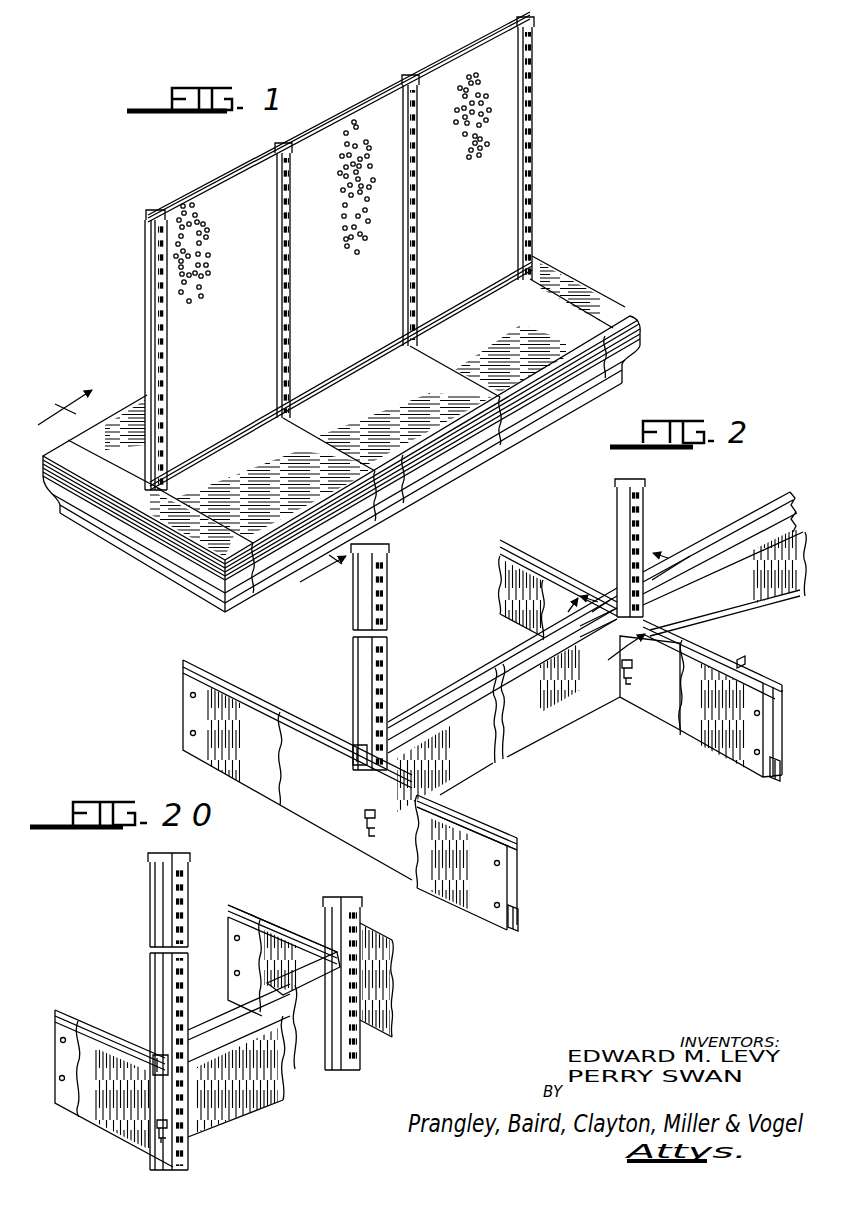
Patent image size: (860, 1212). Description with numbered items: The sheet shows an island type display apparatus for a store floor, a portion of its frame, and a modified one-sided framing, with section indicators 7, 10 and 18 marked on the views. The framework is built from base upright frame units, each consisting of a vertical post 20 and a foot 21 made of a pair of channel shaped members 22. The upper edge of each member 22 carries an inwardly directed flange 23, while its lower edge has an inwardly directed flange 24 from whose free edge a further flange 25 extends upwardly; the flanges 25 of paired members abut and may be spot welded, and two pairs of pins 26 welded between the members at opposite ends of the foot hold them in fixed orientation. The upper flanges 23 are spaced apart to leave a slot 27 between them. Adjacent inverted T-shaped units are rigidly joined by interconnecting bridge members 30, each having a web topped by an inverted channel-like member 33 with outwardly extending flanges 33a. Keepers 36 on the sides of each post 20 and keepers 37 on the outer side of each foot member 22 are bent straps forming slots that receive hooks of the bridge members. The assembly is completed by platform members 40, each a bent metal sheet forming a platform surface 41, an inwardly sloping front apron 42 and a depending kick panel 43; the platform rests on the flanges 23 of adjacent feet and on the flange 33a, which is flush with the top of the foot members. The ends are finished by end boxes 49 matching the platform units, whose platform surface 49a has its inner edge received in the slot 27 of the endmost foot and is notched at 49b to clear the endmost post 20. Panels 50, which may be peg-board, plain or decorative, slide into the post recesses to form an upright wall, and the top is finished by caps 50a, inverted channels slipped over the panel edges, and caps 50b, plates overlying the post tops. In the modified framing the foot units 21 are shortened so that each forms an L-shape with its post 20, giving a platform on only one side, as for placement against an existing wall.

In FIG. 2, the section line 7- 7 is at (636, 592).
In FIG. 2, the section line 10- 10 is at (607, 629).
In FIG. 1, the section line 18- 18 is at (192, 487).
In FIG. 1, the vertical post 20 is at (147, 228).
In FIG. 2, the vertical post 20 is at (645, 533).
In FIG. 20, the vertical post 20 is at (188, 963).
In FIG. 2, the foot 21 is at (512, 828).
In FIG. 2, the channel shaped member 22 is at (783, 694).
In FIG. 20, the channel shaped member 22 is at (150, 1140).
In FIG. 2, the inwardly directed flange 23 is at (267, 700).
In FIG. 20, the inwardly directed flange 23 is at (108, 1033).
In FIG. 2, the inwardly directed flange 24 is at (774, 781).
In FIG. 2, the upwardly extending flange 25 is at (770, 775).
In FIG. 2, the pin 26 is at (190, 694).
In FIG. 20, the pin 26 is at (60, 1040).
In FIG. 2, the slot 27 is at (746, 662).
In FIG. 2, the interconnecting bridge member 30 is at (732, 613).
In FIG. 20, the interconnecting bridge member 30 is at (258, 1103).
In FIG. 2, the inverted channel-like member 33 is at (751, 522).
In FIG. 20, the inverted channel-like member 33 is at (227, 1017).
In FIG. 2, the outwardly extending flange 33a is at (590, 645).
In FIG. 20, the outwardly extending flange 33a is at (300, 945).
In FIG. 2, the keeper 36 is at (356, 765).
In FIG. 20, the keeper 36 is at (160, 1076).
In FIG. 2, the keeper 37 is at (636, 672).
In FIG. 20, the keeper 37 is at (158, 1134).
In FIG. 1, the platform member 40 is at (72, 430).
In FIG. 1, the platform surface 41 is at (137, 458).
In FIG. 1, the front apron 42 is at (403, 503).
In FIG. 1, the kick panel 43 is at (432, 484).
In FIG. 1, the end box 49 is at (592, 277).
In FIG. 1, the platform surface of end box 49a is at (608, 307).
In FIG. 1, the notch 49b is at (152, 489).
In FIG. 1, the panel 50 is at (252, 330).
In FIG. 1, the finishing cap 50a is at (216, 180).
In FIG. 1, the finishing cap 50b is at (274, 143).